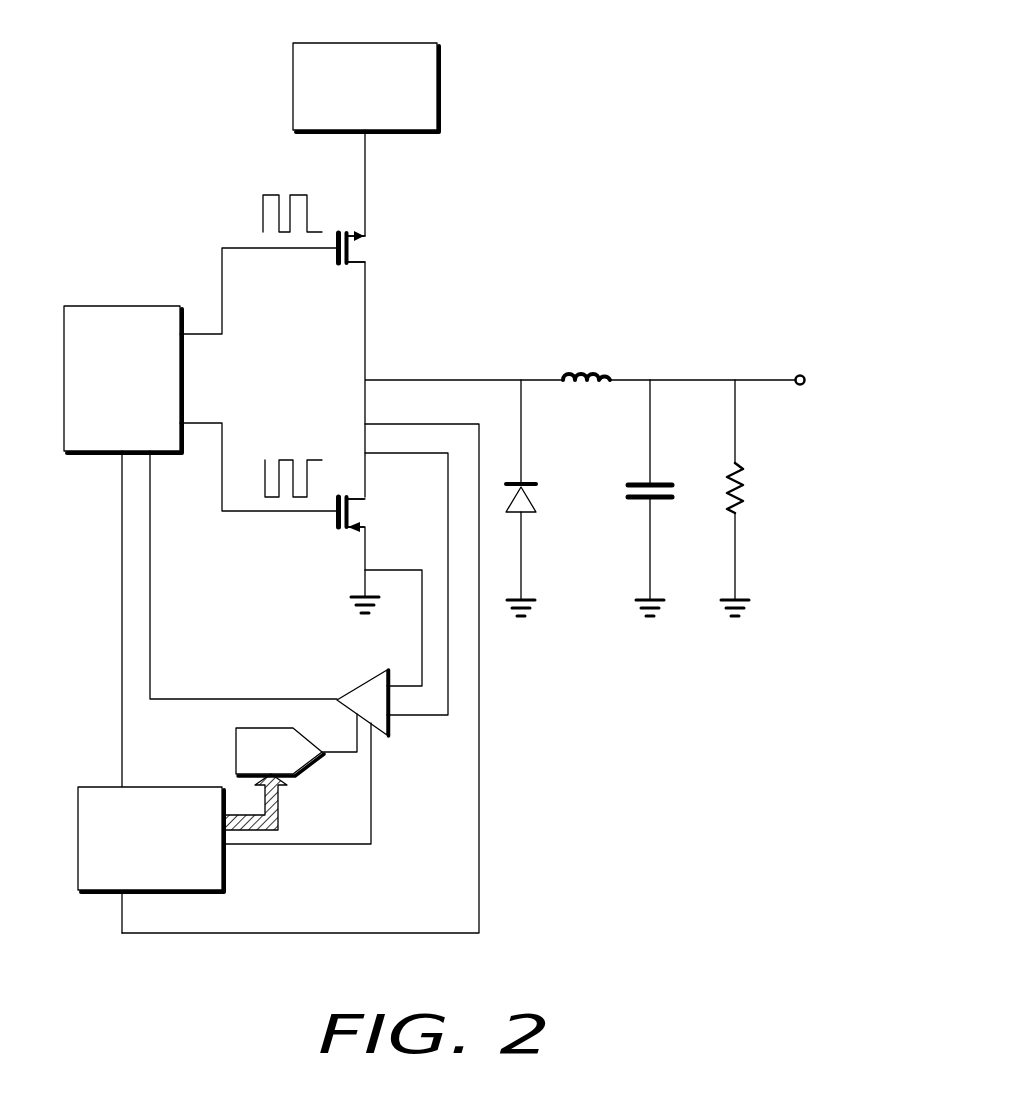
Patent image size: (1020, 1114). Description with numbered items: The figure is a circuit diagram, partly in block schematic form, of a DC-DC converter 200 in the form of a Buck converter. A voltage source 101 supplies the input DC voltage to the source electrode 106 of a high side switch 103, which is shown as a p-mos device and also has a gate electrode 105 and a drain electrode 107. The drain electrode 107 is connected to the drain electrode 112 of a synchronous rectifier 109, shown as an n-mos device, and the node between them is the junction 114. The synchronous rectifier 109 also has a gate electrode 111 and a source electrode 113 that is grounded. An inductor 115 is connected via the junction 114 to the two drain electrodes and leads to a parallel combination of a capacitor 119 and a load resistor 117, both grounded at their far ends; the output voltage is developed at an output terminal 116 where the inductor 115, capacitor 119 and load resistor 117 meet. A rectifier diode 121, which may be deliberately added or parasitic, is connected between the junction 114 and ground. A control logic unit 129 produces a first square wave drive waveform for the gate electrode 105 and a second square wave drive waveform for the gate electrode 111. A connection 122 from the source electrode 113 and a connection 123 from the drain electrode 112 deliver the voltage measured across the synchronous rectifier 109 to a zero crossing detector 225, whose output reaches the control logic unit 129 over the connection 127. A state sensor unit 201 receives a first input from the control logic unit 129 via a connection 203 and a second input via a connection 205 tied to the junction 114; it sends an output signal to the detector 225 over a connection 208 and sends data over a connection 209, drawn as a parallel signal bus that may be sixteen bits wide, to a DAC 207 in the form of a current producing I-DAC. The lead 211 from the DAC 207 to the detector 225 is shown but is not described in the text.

The voltage source 101 is at (413, 40).
The high side switch 103 is at (352, 247).
The gate electrode 105 is at (311, 250).
The source electrode 106 is at (362, 233).
The drain electrode 107 is at (349, 267).
The synchronous rectifier 109 is at (352, 510).
The gate electrode 111 is at (313, 515).
The drain electrode 112 is at (358, 497).
The source electrode 113 is at (349, 531).
The junction 114 is at (365, 380).
The inductor 115 is at (591, 365).
The output terminal 116 is at (780, 391).
The load resistor 117 is at (746, 478).
The capacitor 119 is at (668, 483).
The rectifier diode 121 is at (538, 491).
The connection 122 is at (421, 648).
The connection 123 is at (430, 718).
The output connection 127 is at (195, 700).
The control logic unit 129 is at (150, 305).
The DC-DC converter 200 is at (617, 963).
The state sensor unit 201 is at (224, 872).
The connection 203 is at (121, 676).
The connection 205 is at (480, 700).
The DAC 207 is at (305, 770).
The connection 208 is at (372, 822).
The connection 209 is at (280, 815).
The DAC output line 211 is at (357, 752).
The zero crossing detector 225 is at (355, 683).